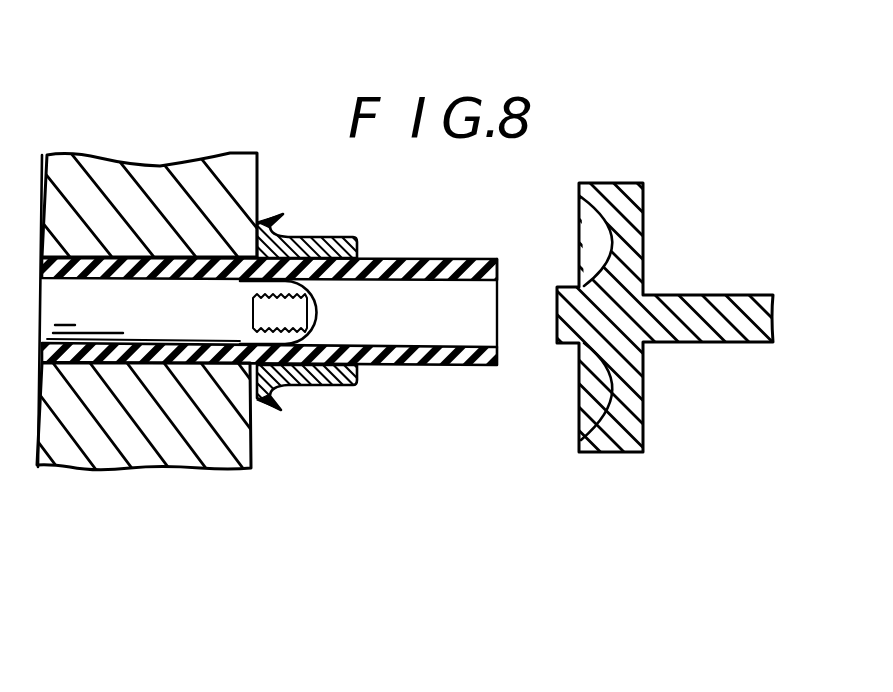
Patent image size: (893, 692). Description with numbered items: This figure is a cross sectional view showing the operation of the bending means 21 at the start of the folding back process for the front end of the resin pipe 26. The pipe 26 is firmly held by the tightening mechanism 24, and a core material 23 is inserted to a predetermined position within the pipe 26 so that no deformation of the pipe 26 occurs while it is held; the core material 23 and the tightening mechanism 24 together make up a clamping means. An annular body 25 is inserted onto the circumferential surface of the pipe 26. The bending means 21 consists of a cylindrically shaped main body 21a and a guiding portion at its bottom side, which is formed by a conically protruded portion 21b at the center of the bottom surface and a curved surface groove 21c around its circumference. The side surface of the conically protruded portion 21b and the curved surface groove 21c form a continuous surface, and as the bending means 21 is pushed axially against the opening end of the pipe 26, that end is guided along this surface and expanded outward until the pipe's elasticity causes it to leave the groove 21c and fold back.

The bending means 21 is at (585, 317).
The main body 21a is at (617, 290).
The conically protruded portion 21b is at (557, 318).
The curved surface groove 21c is at (607, 278).
The core material 23 is at (160, 327).
The tightening mechanism 24 is at (252, 447).
The annular body 25 is at (308, 237).
The resin pipe 26 is at (425, 258).